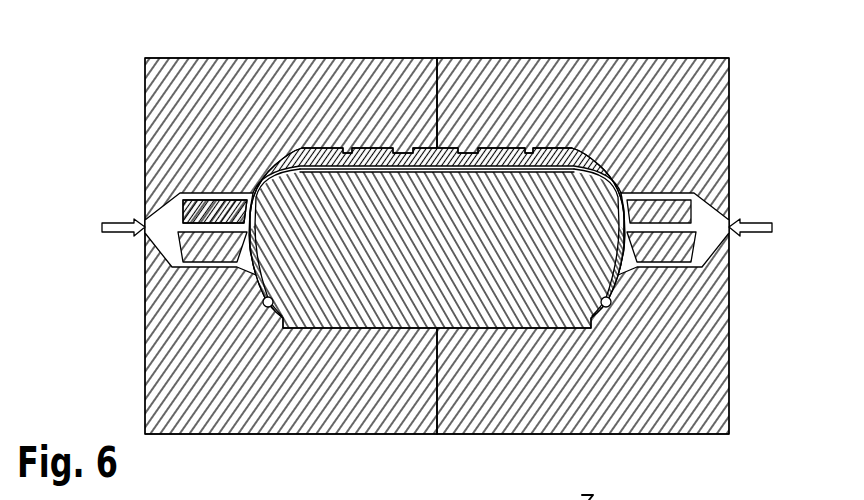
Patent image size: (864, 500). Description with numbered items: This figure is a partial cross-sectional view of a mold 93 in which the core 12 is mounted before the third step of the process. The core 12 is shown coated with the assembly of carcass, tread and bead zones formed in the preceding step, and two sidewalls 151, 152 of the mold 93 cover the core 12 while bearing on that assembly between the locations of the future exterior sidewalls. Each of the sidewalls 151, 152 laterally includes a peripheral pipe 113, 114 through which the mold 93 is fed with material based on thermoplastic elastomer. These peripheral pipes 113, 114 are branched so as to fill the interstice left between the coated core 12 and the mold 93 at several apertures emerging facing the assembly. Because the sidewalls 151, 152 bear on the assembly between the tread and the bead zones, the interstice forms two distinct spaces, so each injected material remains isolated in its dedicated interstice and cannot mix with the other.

The mold 93 is at (770, 88).
The sidewall 152 is at (167, 100).
The sidewall 151 is at (706, 125).
The peripheral pipe 114 is at (152, 235).
The peripheral pipe 113 is at (723, 230).
The core 12 is at (539, 283).